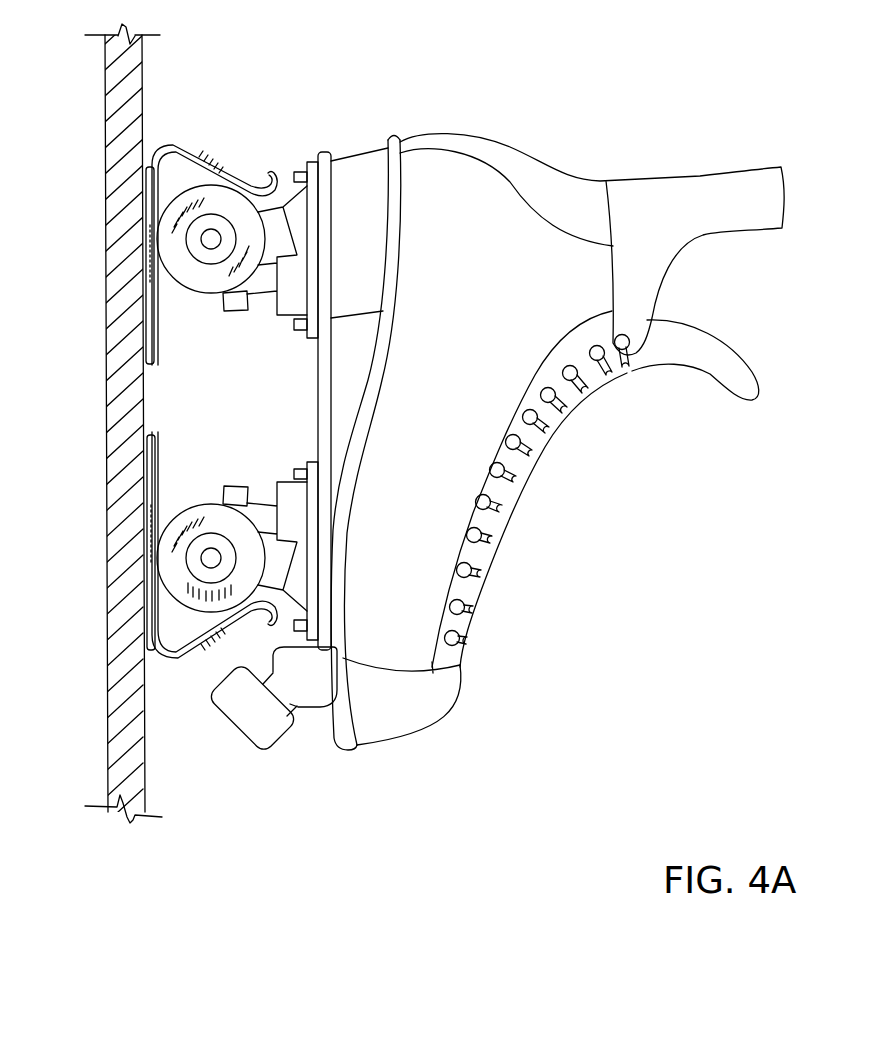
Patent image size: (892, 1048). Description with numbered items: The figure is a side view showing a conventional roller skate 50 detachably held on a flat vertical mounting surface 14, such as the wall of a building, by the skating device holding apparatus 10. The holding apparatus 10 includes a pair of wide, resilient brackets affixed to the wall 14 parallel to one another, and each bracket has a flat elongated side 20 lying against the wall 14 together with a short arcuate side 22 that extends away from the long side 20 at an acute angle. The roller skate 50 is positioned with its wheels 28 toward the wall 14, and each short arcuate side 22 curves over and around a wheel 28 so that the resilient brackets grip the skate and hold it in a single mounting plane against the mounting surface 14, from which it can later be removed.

The skating device holding apparatus 10 is at (203, 392).
The mounting surface 14 is at (106, 733).
The flat elongated side 20 is at (146, 333).
The short arcuate side 22 is at (217, 162).
The wheel 28 is at (168, 218).
The conventional roller skate 50 is at (608, 414).